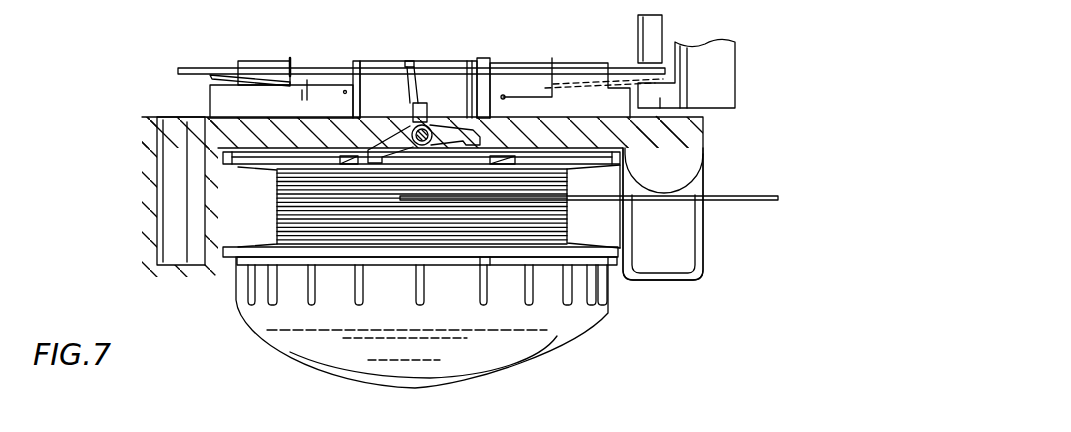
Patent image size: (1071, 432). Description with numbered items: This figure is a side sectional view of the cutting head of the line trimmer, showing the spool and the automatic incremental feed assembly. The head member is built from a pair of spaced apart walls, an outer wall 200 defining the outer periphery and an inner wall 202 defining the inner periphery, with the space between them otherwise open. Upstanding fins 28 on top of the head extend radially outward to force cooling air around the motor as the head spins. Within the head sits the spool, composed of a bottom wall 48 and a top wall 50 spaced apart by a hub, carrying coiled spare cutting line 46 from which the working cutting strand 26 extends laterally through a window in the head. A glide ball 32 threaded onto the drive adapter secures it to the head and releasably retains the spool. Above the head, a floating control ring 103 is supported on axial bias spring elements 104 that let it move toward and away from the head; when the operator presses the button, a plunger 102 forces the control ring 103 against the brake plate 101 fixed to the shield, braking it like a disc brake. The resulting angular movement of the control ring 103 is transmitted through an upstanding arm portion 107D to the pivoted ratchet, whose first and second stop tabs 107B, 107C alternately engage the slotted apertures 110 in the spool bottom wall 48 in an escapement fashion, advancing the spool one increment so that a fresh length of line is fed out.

The cutting strand 26 is at (760, 196).
The upstanding fins 28 is at (210, 100).
The glide ball 32 is at (306, 360).
The spare cutting line 46 is at (277, 207).
The bottom wall 48 is at (238, 168).
The top wall 50 is at (613, 270).
The brake plate 101 is at (736, 68).
The plunger 102 is at (664, 24).
The control ring 103 is at (186, 67).
The axial bias spring elements 104 is at (290, 60).
The first stop tab 107B is at (384, 150).
The second stop tab 107C is at (460, 128).
The upstanding arm portion 107D is at (411, 60).
The slotted apertures 110 is at (497, 147).
The outer wall 200 is at (703, 262).
The inner wall 202 is at (218, 285).